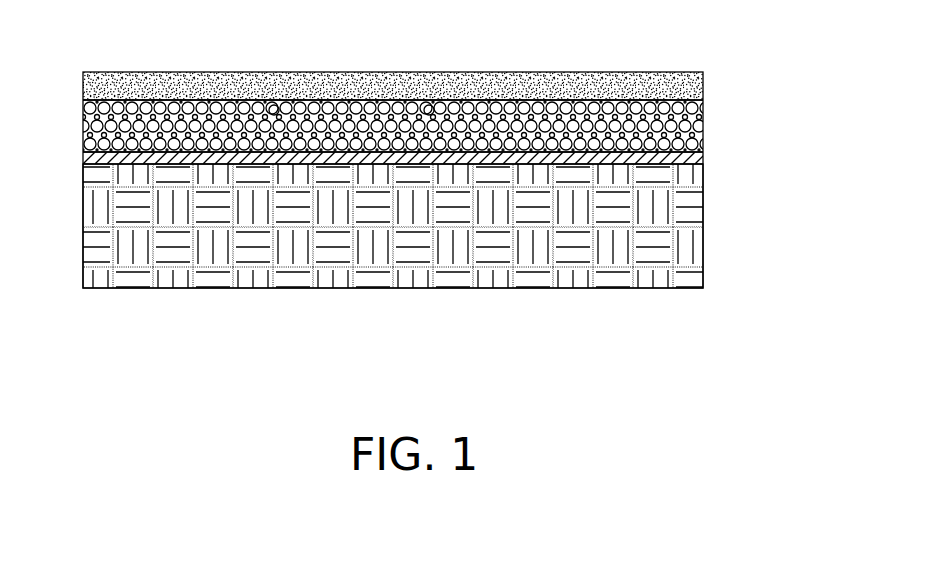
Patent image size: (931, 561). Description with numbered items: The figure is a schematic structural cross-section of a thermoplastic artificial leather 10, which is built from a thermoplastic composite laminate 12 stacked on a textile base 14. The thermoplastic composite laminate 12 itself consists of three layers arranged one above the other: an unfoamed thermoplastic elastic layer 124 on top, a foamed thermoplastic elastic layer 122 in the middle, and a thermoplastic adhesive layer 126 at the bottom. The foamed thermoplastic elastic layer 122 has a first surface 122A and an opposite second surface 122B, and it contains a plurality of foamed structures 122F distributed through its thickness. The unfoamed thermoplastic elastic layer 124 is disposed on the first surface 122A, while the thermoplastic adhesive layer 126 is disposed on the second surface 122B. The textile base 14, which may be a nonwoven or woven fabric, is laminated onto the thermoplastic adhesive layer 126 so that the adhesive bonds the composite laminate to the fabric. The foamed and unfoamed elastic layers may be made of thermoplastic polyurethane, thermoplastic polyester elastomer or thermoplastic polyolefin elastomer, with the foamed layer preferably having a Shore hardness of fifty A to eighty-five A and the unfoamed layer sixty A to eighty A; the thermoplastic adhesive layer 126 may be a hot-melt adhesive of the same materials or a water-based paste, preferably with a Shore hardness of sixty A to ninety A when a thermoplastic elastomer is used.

The thermoplastic artificial leather 10 is at (425, 351).
The thermoplastic composite laminate 12 is at (816, 82).
The textile base 14 is at (704, 215).
The foamed thermoplastic elastic layer 122 is at (704, 122).
The first surface 122A is at (647, 100).
The second surface 122B is at (535, 150).
The foamed structures 122F is at (274, 106).
The unfoamed thermoplastic elastic layer 124 is at (704, 84).
The thermoplastic adhesive layer 126 is at (704, 157).